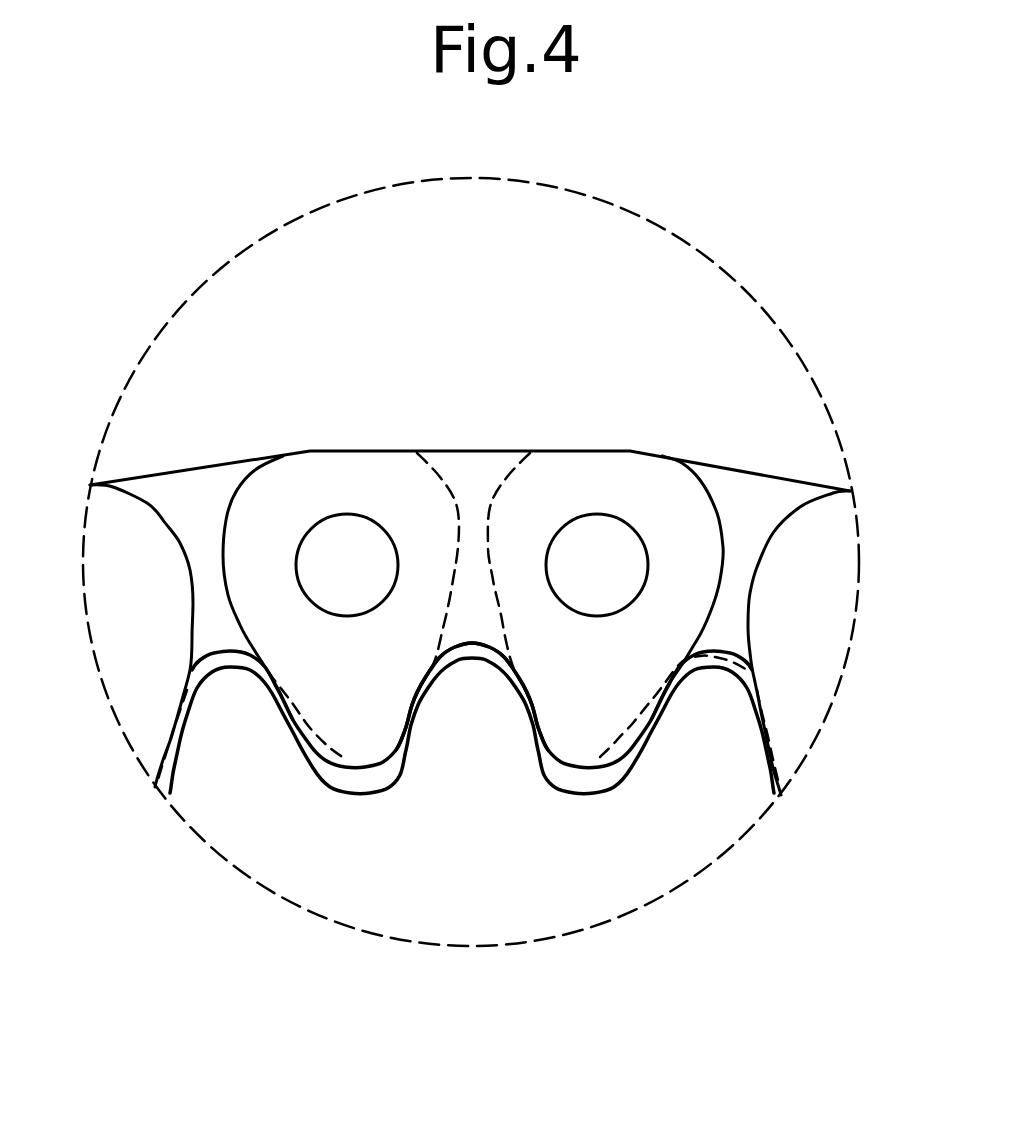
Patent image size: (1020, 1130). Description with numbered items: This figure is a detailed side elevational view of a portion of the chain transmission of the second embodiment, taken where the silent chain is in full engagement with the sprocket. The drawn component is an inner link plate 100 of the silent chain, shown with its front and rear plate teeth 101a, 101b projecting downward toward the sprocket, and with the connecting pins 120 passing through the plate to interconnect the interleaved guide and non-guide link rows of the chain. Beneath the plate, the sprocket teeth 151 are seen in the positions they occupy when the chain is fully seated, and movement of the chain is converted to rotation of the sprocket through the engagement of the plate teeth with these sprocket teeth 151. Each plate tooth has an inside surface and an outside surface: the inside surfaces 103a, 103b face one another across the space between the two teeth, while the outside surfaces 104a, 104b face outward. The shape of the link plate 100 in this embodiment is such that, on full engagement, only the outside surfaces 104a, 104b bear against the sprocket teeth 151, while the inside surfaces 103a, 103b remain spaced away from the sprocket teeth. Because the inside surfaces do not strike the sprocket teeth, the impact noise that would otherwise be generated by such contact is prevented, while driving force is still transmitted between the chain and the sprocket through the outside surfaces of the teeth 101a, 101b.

The inner link plate 100 is at (195, 503).
The connecting pin 120 is at (337, 547).
The front plate tooth 101a is at (358, 743).
The rear plate tooth 101b is at (588, 740).
The sprocket tooth 151 is at (228, 710).
The inside surface 103a is at (417, 708).
The inside surface 103b is at (523, 722).
The outside surface 104a is at (294, 715).
The outside surface 104b is at (648, 705).